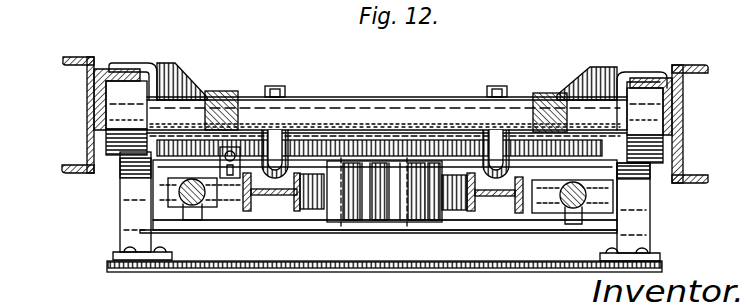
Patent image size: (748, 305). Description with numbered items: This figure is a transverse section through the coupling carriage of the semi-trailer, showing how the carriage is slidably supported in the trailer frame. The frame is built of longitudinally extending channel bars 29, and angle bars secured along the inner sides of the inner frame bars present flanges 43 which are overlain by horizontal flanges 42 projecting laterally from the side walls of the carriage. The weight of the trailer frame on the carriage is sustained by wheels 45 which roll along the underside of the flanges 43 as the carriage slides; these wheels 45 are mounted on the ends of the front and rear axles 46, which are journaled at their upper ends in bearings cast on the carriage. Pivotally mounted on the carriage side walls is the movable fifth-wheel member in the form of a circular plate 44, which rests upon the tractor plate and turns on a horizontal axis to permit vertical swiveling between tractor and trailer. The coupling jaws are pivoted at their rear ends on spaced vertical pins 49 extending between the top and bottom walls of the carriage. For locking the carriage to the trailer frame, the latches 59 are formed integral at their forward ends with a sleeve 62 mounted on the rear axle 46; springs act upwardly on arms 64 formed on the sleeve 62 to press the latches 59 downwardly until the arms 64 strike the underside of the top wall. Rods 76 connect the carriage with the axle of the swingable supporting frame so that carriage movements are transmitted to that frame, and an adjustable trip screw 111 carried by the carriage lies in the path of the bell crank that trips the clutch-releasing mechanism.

The channel bar 29 is at (87, 106).
The horizontal flange 42 is at (132, 64).
The flange 43 is at (104, 69).
The circular plate 44 is at (260, 272).
The wheel 45 is at (120, 140).
The axle 46 is at (284, 196).
The vertical pin 49 is at (407, 212).
The latch 59 is at (222, 91).
The sleeve 62 is at (336, 108).
The arm 64 is at (296, 146).
The rod 76 is at (120, 229).
The adjustable trip screw 111 is at (229, 180).